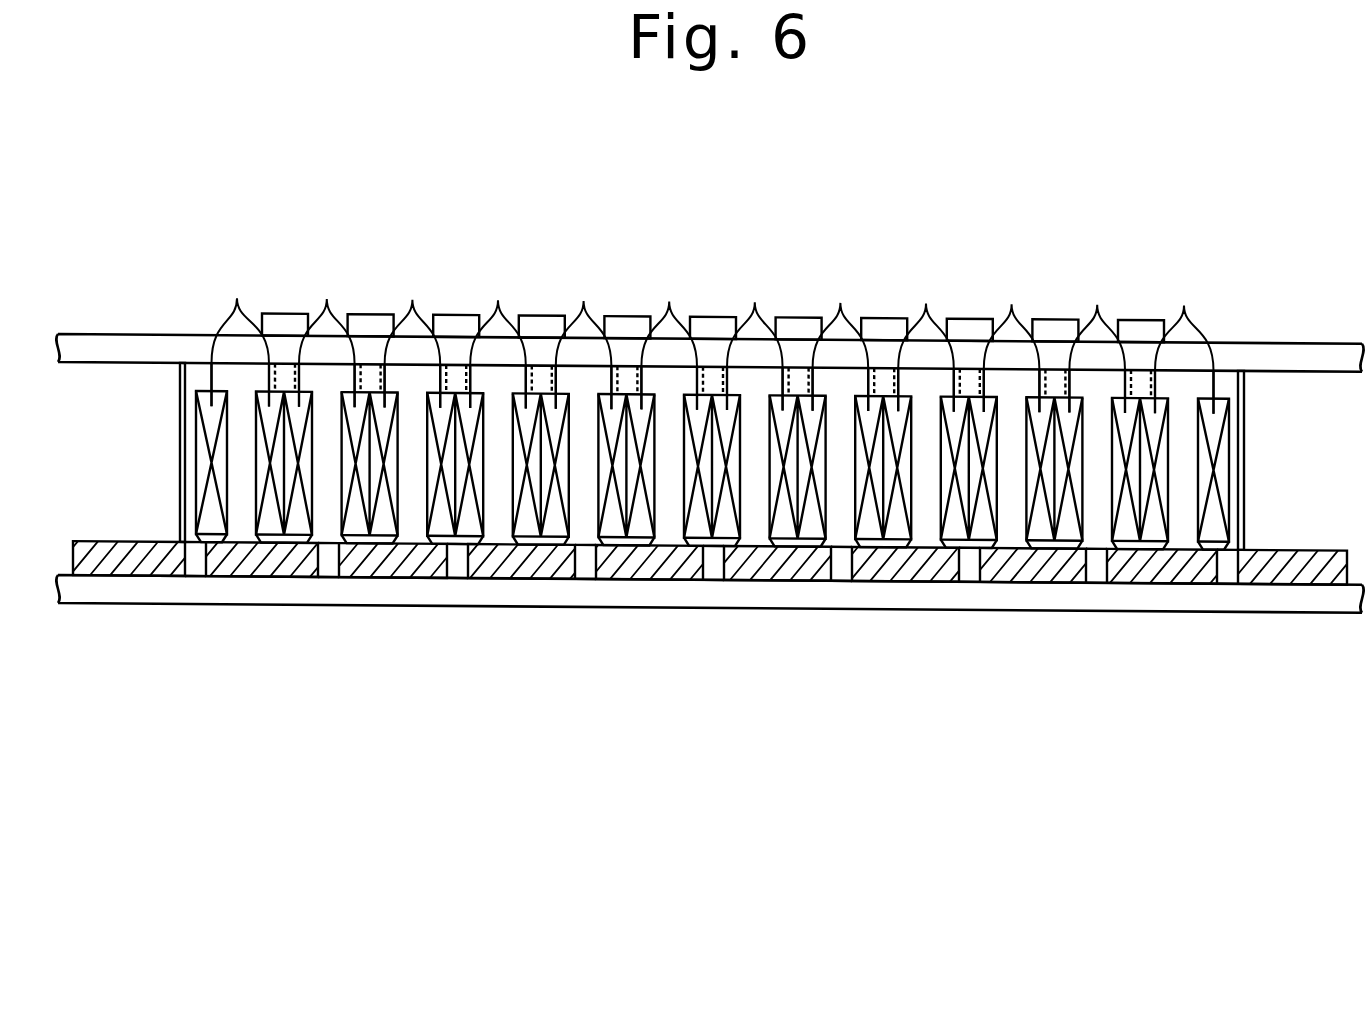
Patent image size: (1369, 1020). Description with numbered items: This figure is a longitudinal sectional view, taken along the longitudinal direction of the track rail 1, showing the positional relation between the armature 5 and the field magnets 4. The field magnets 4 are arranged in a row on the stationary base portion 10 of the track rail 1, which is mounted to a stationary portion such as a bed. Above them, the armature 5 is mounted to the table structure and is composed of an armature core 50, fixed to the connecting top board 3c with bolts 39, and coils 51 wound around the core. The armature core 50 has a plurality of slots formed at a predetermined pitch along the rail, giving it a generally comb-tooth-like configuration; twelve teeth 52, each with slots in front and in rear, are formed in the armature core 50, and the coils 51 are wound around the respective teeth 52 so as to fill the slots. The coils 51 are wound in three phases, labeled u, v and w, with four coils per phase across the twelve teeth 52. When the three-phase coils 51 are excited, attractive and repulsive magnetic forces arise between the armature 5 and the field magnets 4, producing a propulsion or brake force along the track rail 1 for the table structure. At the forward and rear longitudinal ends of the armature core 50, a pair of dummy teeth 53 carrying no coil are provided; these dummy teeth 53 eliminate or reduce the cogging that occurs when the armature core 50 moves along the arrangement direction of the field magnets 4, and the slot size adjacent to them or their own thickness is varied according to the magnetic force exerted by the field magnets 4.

The track rail 1 is at (743, 624).
The connecting top board 3c is at (1307, 343).
The field magnets 4 is at (262, 562).
The armature 5 is at (1274, 436).
The stationary base portion 10 is at (987, 609).
The bolts 39 is at (283, 311).
The armature core 50 is at (198, 366).
The coils 51 is at (868, 528).
The teeth 52 is at (1093, 530).
The dummy teeth 53 is at (181, 463).